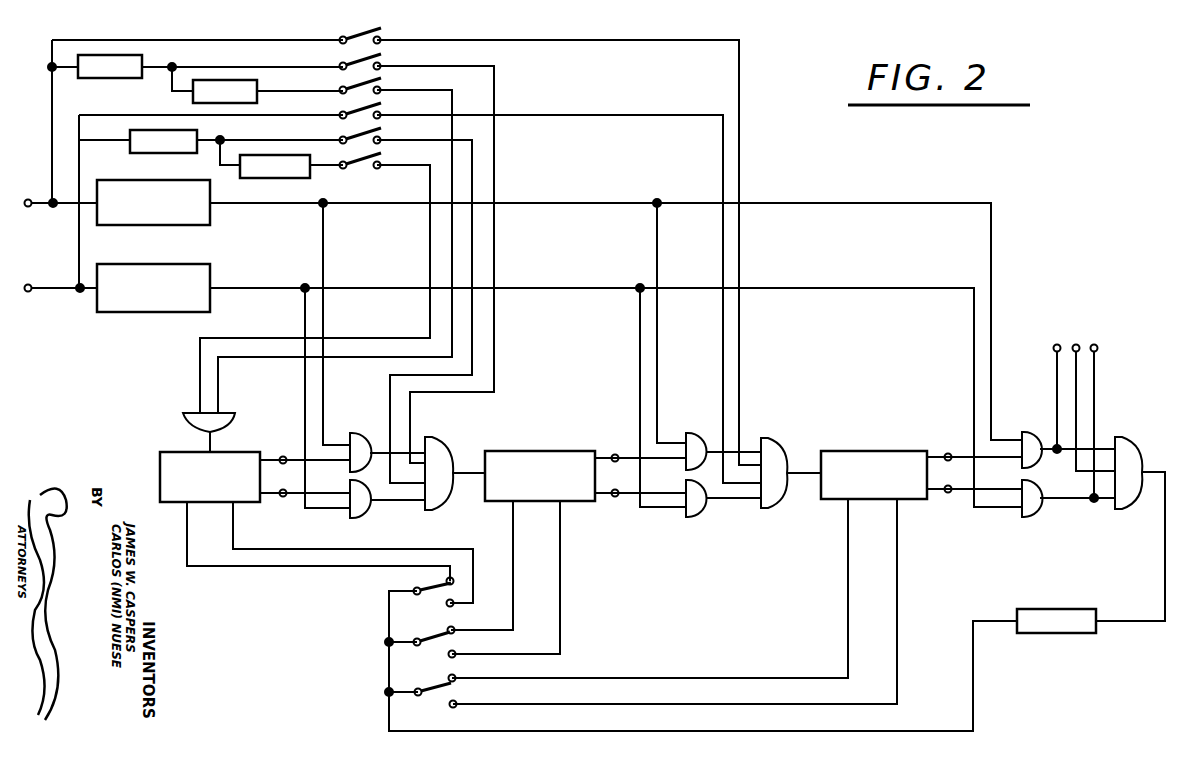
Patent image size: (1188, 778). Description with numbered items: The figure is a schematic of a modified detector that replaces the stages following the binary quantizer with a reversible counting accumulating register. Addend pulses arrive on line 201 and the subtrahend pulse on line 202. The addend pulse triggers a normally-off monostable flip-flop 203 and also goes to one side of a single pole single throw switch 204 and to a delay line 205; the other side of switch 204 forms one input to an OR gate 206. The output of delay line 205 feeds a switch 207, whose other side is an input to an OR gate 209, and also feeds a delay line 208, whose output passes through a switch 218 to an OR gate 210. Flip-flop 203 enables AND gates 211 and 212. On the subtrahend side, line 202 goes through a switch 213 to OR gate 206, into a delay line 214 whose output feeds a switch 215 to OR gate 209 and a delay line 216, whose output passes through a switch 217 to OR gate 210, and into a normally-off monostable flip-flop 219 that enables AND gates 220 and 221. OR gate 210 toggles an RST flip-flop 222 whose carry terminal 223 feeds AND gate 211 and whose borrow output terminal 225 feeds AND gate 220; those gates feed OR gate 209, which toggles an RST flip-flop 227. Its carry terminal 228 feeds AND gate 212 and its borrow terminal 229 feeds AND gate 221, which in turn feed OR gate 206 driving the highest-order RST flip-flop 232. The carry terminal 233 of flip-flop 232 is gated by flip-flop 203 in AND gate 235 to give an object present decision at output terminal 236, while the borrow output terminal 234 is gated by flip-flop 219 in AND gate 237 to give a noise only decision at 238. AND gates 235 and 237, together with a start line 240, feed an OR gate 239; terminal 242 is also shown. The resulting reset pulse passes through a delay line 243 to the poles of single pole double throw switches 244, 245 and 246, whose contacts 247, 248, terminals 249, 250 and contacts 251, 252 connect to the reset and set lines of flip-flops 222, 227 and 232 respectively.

The addend line 201 is at (33, 193).
The subtrahend line 202 is at (33, 280).
The monostable flip-flop 203 is at (212, 220).
The single pole single throw switch 204 is at (359, 30).
The delay line 205 is at (102, 80).
The OR gate 206 is at (774, 444).
The single pole single throw switch 207 is at (346, 63).
The delay line 208 is at (195, 101).
The OR gate 209 is at (440, 450).
The OR gate 210 is at (183, 425).
The AND gate 211 is at (372, 428).
The AND gate 212 is at (709, 437).
The single pole single throw switch 213 is at (347, 112).
The delay line 214 is at (133, 152).
The switch 215 is at (347, 137).
The delay line 216 is at (258, 179).
The single pole single throw switch 217 is at (347, 162).
The single pole single throw switch 218 is at (346, 87).
The monostable flip-flop 219 is at (211, 268).
The AND gate 220 is at (364, 514).
The AND gate 221 is at (696, 517).
The RST flip-flop 222 is at (218, 451).
The carry terminal 223 is at (288, 456).
The borrow output terminal 225 is at (283, 497).
The RST flip-flop 227 is at (530, 451).
The carry terminal 228 is at (622, 437).
The borrow terminal 229 is at (614, 497).
The RST flip-flop 232 is at (852, 451).
The carry terminal 233 is at (962, 435).
The borrow output terminal 234 is at (947, 493).
The AND gate 235 is at (1042, 425).
The output terminal 236 is at (1053, 347).
The AND gate 237 is at (1033, 516).
The noise only decision output 238 is at (1097, 346).
The OR gate 239 is at (1128, 450).
The start line 240 is at (1075, 374).
The output terminal 242 is at (1078, 345).
The delay line 243 is at (1084, 608).
The single pole double throw switch 244 is at (415, 587).
The single pole double throw switch 245 is at (433, 641).
The single pole double throw switch 246 is at (431, 692).
The switch contact 247 is at (453, 579).
The switch contact 248 is at (452, 606).
The switch terminal 249 is at (447, 629).
The switch terminal 250 is at (453, 651).
The switch contact 251 is at (458, 669).
The switch contact 252 is at (460, 694).